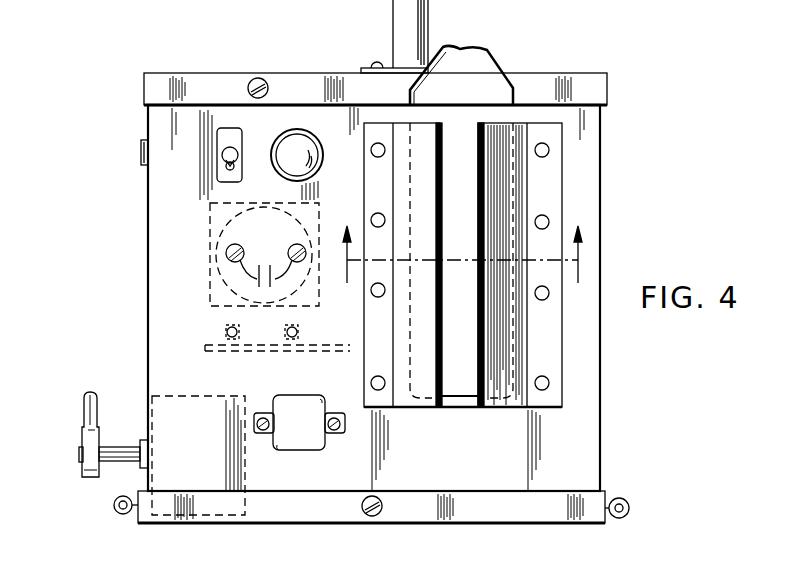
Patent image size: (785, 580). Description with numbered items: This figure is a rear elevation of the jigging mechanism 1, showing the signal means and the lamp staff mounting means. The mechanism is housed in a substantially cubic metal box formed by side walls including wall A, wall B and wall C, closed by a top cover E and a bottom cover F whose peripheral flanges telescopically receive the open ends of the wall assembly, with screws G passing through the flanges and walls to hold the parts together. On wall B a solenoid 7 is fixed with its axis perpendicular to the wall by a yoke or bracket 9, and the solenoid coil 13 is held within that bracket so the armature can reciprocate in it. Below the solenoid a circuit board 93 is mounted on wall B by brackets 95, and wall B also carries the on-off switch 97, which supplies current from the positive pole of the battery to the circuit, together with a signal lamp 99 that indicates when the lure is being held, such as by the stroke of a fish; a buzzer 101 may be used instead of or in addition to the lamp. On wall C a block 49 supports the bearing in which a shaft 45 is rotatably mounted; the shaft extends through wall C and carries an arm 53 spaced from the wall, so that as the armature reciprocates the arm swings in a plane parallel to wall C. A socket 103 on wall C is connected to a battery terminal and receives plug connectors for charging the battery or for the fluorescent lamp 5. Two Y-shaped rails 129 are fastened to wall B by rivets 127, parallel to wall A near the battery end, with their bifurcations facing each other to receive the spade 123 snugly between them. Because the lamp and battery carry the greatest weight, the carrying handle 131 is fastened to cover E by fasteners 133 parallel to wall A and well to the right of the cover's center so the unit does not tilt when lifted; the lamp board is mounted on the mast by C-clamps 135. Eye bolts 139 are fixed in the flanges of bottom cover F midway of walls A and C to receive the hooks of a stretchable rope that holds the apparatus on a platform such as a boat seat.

The jigging mechanism 1 is at (72, 78).
The side wall A is at (600, 425).
The side wall B is at (412, 468).
The side wall C is at (148, 290).
The top cover E is at (196, 73).
The bottom cover F is at (503, 523).
The screws G is at (256, 78).
The fluorescent lamp 5 is at (462, 239).
The solenoid 7 is at (212, 280).
The yoke or bracket 9 is at (210, 300).
The solenoid coil 13 is at (212, 236).
The shaft 45 is at (118, 463).
The block 49 is at (207, 478).
The arm 53 is at (88, 410).
The circuit board 93 is at (320, 352).
The brackets 95 is at (288, 335).
The on-off switch 97 is at (220, 163).
The signal lamp 99 is at (297, 140).
The buzzer 101 is at (305, 445).
The socket 103 is at (141, 152).
The spade 123 is at (480, 88).
The rivets 127 is at (542, 150).
The Y-shaped rails 129 is at (428, 408).
The carrying handle 131 is at (428, 25).
The fasteners 133 is at (377, 62).
The C-clamps 135 is at (351, 6).
The eye bolts 139 is at (116, 512).